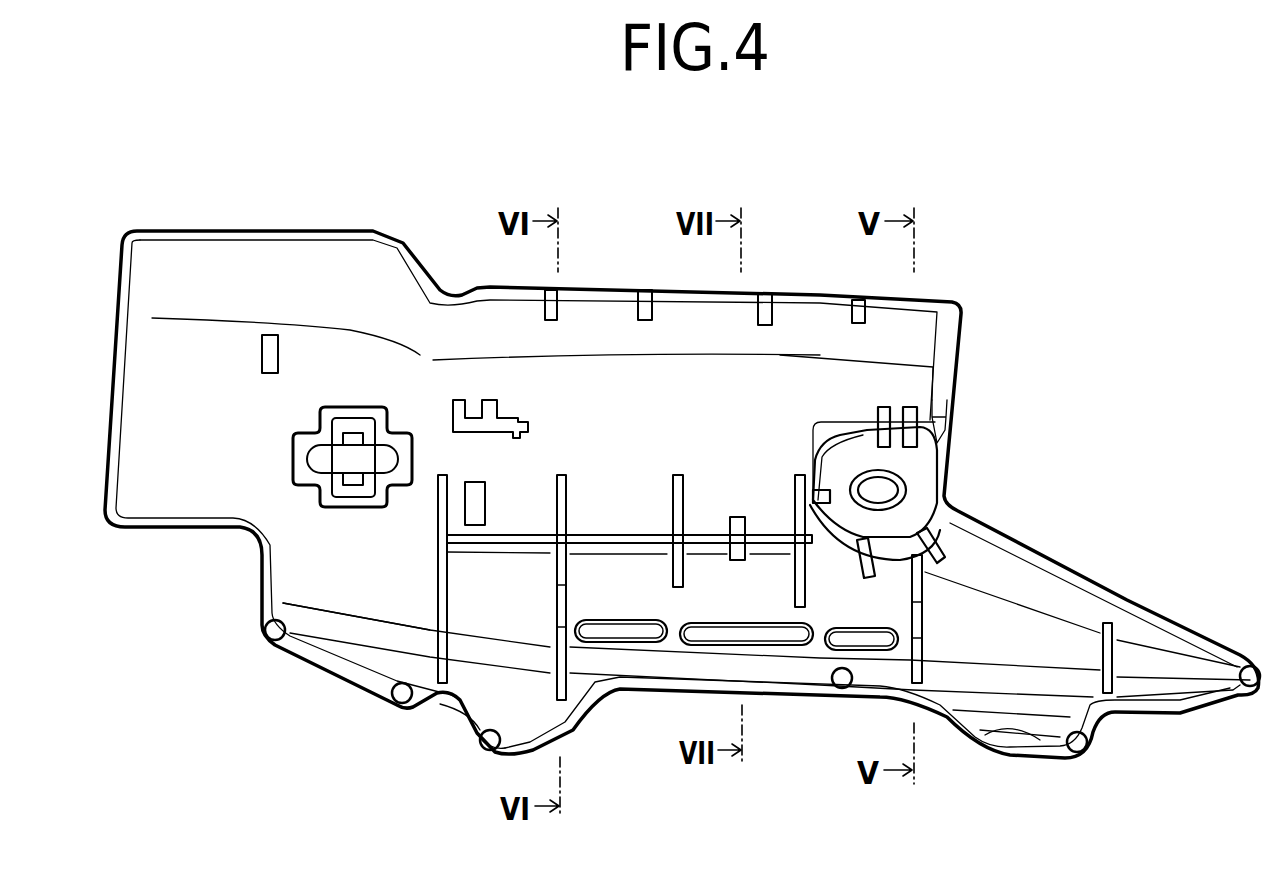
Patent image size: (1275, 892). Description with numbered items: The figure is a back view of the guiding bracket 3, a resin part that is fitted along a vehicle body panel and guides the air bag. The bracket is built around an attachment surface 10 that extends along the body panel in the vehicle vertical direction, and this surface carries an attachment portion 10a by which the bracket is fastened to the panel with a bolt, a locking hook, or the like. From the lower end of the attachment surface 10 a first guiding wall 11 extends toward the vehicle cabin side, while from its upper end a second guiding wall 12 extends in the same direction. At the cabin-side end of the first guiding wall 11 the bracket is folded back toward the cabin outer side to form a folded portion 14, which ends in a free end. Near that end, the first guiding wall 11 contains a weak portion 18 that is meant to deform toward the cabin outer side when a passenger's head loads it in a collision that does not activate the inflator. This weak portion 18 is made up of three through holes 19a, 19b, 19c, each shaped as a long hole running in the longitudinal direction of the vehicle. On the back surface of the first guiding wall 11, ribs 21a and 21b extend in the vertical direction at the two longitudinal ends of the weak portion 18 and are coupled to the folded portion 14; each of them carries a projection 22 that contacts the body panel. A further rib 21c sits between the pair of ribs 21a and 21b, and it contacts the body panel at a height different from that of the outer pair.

The guiding bracket 3 is at (652, 485).
The attachment surface 10 is at (177, 410).
The attachment portion 10a is at (317, 463).
The first guiding wall 11 is at (475, 617).
The second guiding wall 12 is at (460, 330).
The folded portion 14 is at (488, 715).
The weak portion 18 is at (736, 724).
The through hole 19a is at (767, 640).
The through hole 19b is at (870, 645).
The through hole 19c is at (613, 640).
The rib 21a is at (925, 592).
The rib 21b is at (567, 505).
The rib 21c is at (740, 523).
The projection 22 is at (558, 600).